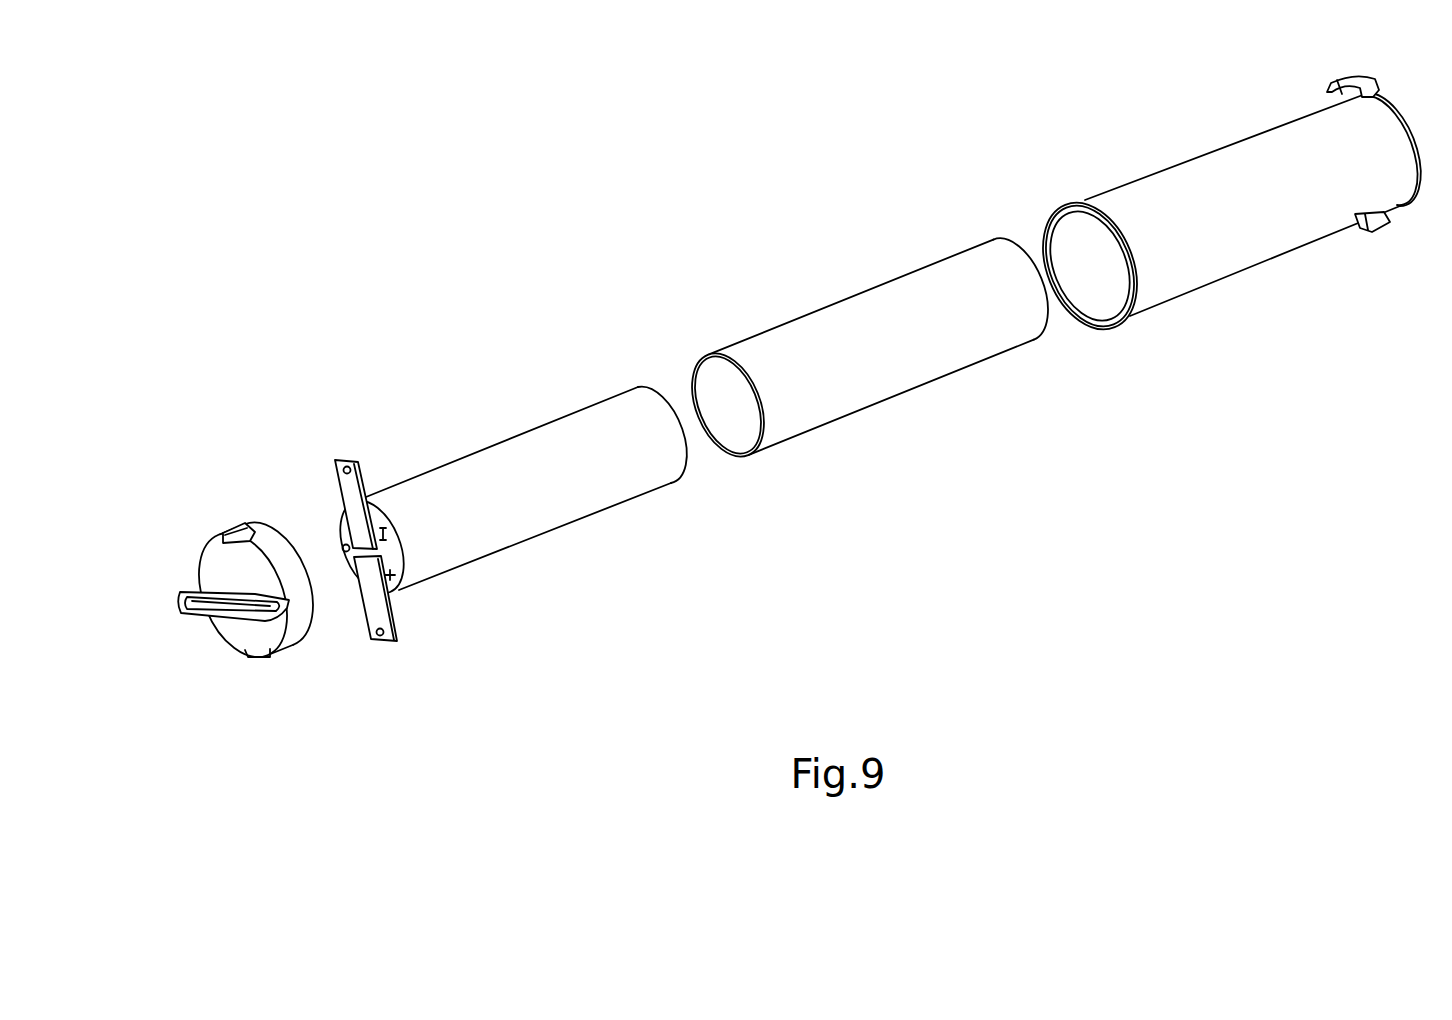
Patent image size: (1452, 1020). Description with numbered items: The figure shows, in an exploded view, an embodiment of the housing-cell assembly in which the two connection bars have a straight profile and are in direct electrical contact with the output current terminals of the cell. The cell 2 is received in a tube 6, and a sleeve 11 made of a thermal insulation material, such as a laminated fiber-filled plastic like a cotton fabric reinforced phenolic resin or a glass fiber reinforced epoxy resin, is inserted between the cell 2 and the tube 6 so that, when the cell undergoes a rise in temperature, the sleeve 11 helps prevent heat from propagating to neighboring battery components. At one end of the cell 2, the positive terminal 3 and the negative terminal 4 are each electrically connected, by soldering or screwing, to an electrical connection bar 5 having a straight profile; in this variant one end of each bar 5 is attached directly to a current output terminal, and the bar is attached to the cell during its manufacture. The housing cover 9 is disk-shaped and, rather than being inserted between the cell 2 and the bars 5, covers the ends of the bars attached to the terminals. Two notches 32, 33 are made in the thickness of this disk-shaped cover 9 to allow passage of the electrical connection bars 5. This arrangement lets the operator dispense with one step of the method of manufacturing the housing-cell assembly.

The cell 2 is at (541, 543).
The positive terminal 3 is at (391, 587).
The negative terminal 4 is at (393, 534).
The electrical connection bar 5 is at (342, 460).
The tube 6 is at (1224, 277).
The housing cover 9 is at (222, 640).
The sleeve 11 is at (878, 408).
The notch 32 is at (254, 524).
The notch 33 is at (255, 665).